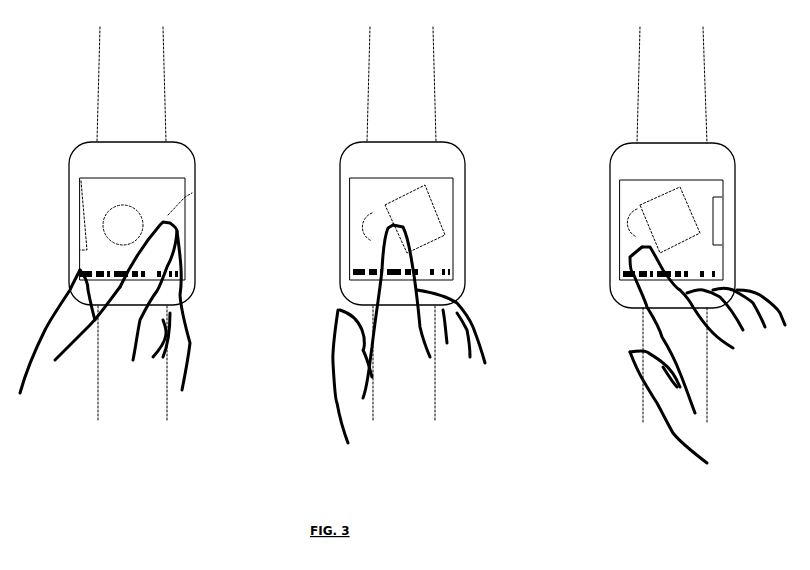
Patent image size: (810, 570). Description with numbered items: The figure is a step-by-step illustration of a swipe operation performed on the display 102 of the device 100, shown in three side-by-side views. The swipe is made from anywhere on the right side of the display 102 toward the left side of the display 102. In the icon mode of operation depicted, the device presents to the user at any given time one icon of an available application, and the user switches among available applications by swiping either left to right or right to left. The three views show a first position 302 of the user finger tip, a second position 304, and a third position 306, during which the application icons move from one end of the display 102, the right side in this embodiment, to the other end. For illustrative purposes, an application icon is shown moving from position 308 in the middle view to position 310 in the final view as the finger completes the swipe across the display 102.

The device 100 is at (195, 215).
The display 102 is at (155, 204).
The first position 302 is at (160, 227).
The second position 304 is at (383, 240).
The third position 306 is at (627, 283).
The position 308 is at (418, 208).
The position 310 is at (678, 205).